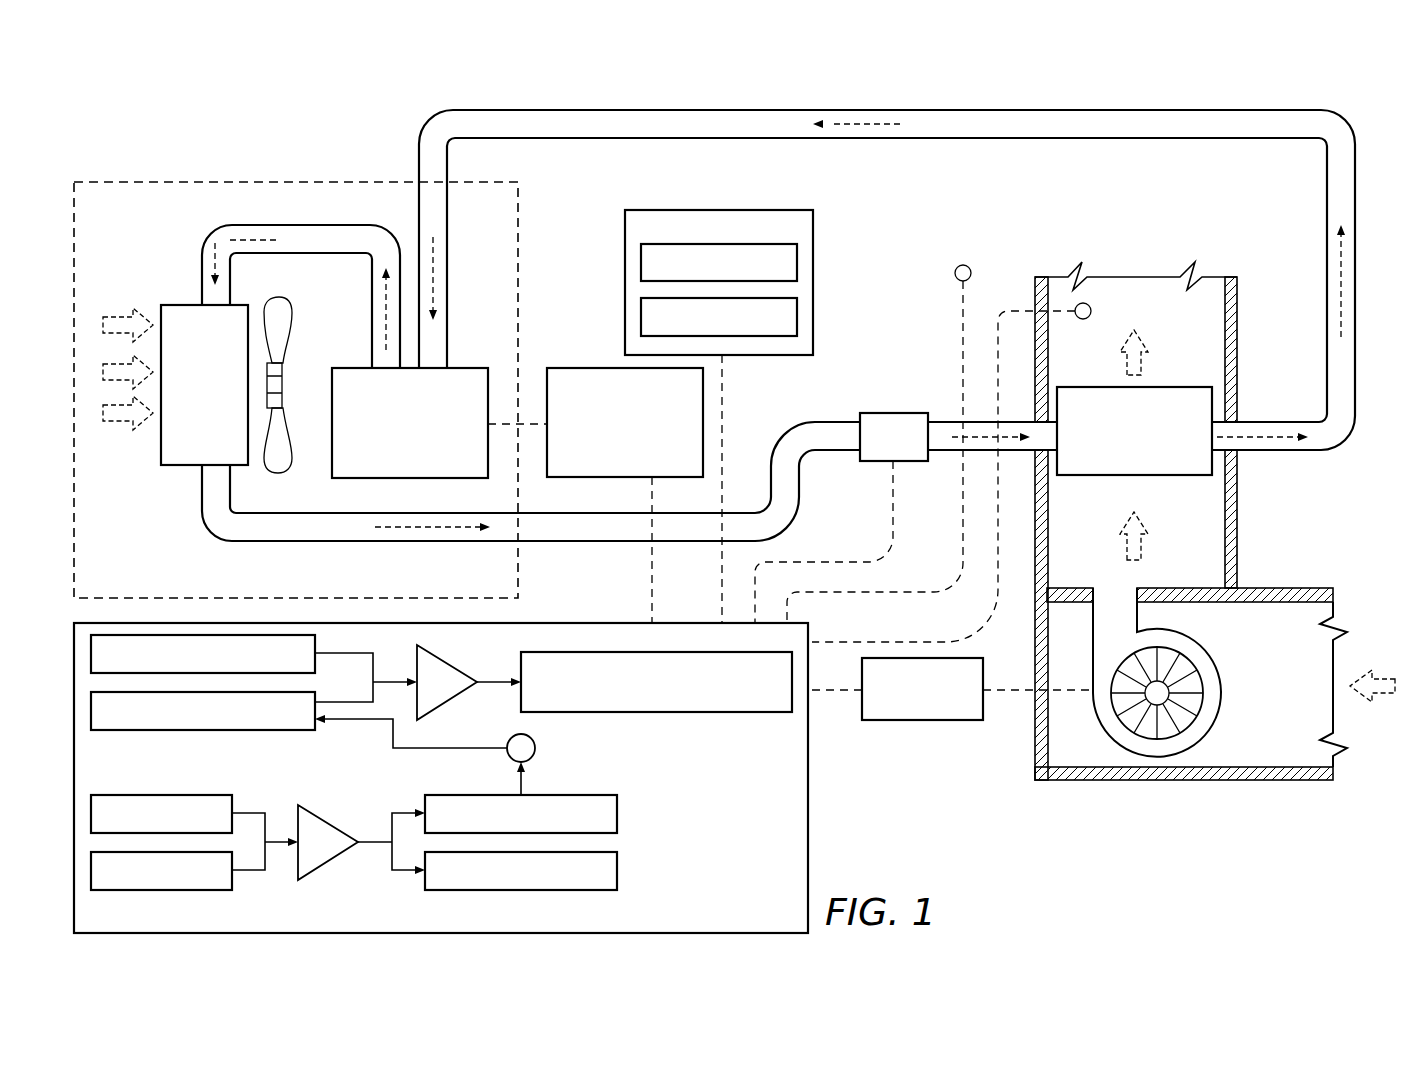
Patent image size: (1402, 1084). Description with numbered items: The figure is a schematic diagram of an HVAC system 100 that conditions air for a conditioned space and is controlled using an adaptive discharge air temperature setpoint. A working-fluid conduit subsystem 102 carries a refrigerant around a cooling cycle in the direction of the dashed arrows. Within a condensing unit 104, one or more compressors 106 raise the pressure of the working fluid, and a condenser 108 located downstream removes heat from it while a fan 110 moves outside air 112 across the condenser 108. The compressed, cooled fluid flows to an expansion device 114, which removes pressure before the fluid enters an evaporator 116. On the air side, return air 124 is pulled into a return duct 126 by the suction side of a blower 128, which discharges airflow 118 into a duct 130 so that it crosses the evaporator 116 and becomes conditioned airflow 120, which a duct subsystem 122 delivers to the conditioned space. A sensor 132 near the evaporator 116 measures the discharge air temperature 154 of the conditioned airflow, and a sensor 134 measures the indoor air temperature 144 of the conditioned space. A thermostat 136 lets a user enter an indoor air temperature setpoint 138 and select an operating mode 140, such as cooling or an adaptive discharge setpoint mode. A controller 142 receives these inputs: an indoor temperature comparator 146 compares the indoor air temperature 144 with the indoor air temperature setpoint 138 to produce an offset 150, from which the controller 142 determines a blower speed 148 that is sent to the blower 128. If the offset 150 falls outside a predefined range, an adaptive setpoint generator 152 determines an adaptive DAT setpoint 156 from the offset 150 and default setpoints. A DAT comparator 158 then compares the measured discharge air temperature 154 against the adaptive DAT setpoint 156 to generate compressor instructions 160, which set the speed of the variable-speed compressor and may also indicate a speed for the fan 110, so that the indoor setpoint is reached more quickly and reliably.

The HVAC system 100 is at (1306, 86).
The working-fluid conduit subsystem 102 is at (617, 110).
The condensing unit 104 is at (278, 182).
The compressors 106 is at (410, 423).
The condenser 108 is at (161, 447).
The fan 110 is at (290, 318).
The air 112 is at (114, 316).
The expansion device 114 is at (841, 518).
The evaporator 116 is at (1134, 431).
The airflow 118 is at (1142, 540).
The conditioned airflow 120 is at (1142, 364).
The duct subsystem 122 is at (1238, 325).
The return air 124 is at (1377, 702).
The return duct 126 is at (1263, 780).
The blower 128 is at (1209, 653).
The duct 130 is at (1237, 503).
The sensor 132 is at (1091, 311).
The sensor 134 is at (968, 266).
The thermostat 136 is at (815, 233).
The indoor air temperature setpoint 138 is at (797, 265).
The operating mode 140 is at (797, 320).
The controller 142 is at (441, 778).
The indoor air temperature 144 is at (194, 832).
The indoor temperature comparator 146 is at (361, 842).
The blower speed 148 is at (759, 774).
The offset 150 is at (521, 814).
The adaptive setpoint generator 152 is at (535, 748).
The discharge air temperature 154 is at (254, 668).
The adaptive DAT setpoint 156 is at (299, 720).
The DAT comparator 158 is at (469, 682).
The compressor instructions 160 is at (640, 540).